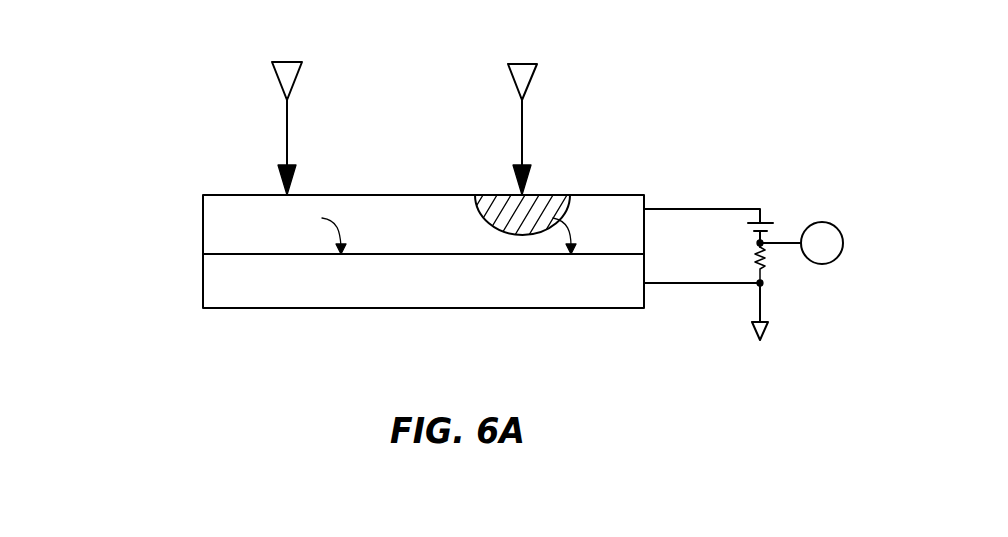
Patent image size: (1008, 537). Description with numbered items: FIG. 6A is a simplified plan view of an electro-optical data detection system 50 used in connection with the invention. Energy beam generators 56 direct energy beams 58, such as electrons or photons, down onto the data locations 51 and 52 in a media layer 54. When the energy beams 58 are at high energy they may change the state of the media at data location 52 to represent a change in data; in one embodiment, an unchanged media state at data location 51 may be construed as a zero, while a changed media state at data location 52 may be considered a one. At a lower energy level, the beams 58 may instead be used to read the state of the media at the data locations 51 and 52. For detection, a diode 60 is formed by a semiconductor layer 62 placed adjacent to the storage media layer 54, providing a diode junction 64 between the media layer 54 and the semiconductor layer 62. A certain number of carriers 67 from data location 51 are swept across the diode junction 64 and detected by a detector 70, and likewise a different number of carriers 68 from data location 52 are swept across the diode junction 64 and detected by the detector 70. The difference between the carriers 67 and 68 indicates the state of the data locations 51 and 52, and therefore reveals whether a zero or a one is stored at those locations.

The detector apparatus 50 is at (179, 120).
The data location 51 is at (312, 188).
The data location 52 is at (543, 188).
The media layer 54 is at (203, 217).
The energy beam generator 56 is at (288, 63).
The energy beam 58 is at (288, 131).
The diode 60 is at (158, 256).
The semiconductor layer 62 is at (203, 300).
The diode junction 64 is at (250, 255).
The carriers 67 is at (348, 219).
The carriers 68 is at (566, 219).
The detector 70 is at (832, 235).